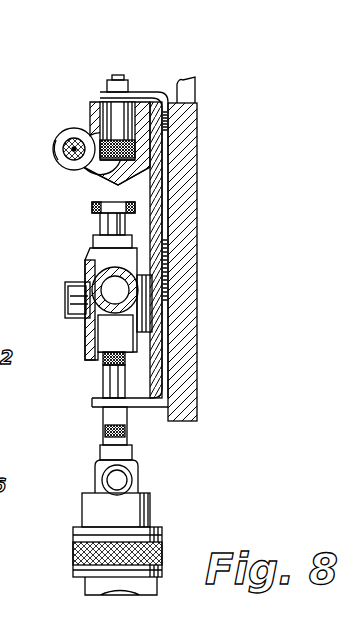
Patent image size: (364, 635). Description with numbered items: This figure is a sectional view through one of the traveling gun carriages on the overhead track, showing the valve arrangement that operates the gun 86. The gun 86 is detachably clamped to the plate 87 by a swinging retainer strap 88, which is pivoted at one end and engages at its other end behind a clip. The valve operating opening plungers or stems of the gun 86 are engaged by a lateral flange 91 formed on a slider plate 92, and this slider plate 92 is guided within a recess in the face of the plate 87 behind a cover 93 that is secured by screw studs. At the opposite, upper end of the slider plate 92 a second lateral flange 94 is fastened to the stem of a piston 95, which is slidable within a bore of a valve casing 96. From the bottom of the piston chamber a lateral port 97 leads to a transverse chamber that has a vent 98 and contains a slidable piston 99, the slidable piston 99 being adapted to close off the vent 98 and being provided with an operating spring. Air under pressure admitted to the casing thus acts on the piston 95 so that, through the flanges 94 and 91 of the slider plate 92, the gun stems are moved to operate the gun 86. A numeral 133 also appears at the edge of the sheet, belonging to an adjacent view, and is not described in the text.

The gun 86 is at (155, 502).
The plate 87 is at (183, 252).
The swinging retainer strap 88 is at (86, 338).
The lateral flange 91 is at (148, 403).
The slider plate 92 is at (165, 235).
The cover 93 is at (157, 188).
The lateral flange 94 is at (141, 92).
The piston 95 is at (90, 134).
The valve casing 96 is at (56, 131).
The lateral port 97 is at (77, 166).
The vent 98 is at (52, 147).
The slidable piston 99 is at (57, 158).
The adjacent element 133 is at (0, 416).